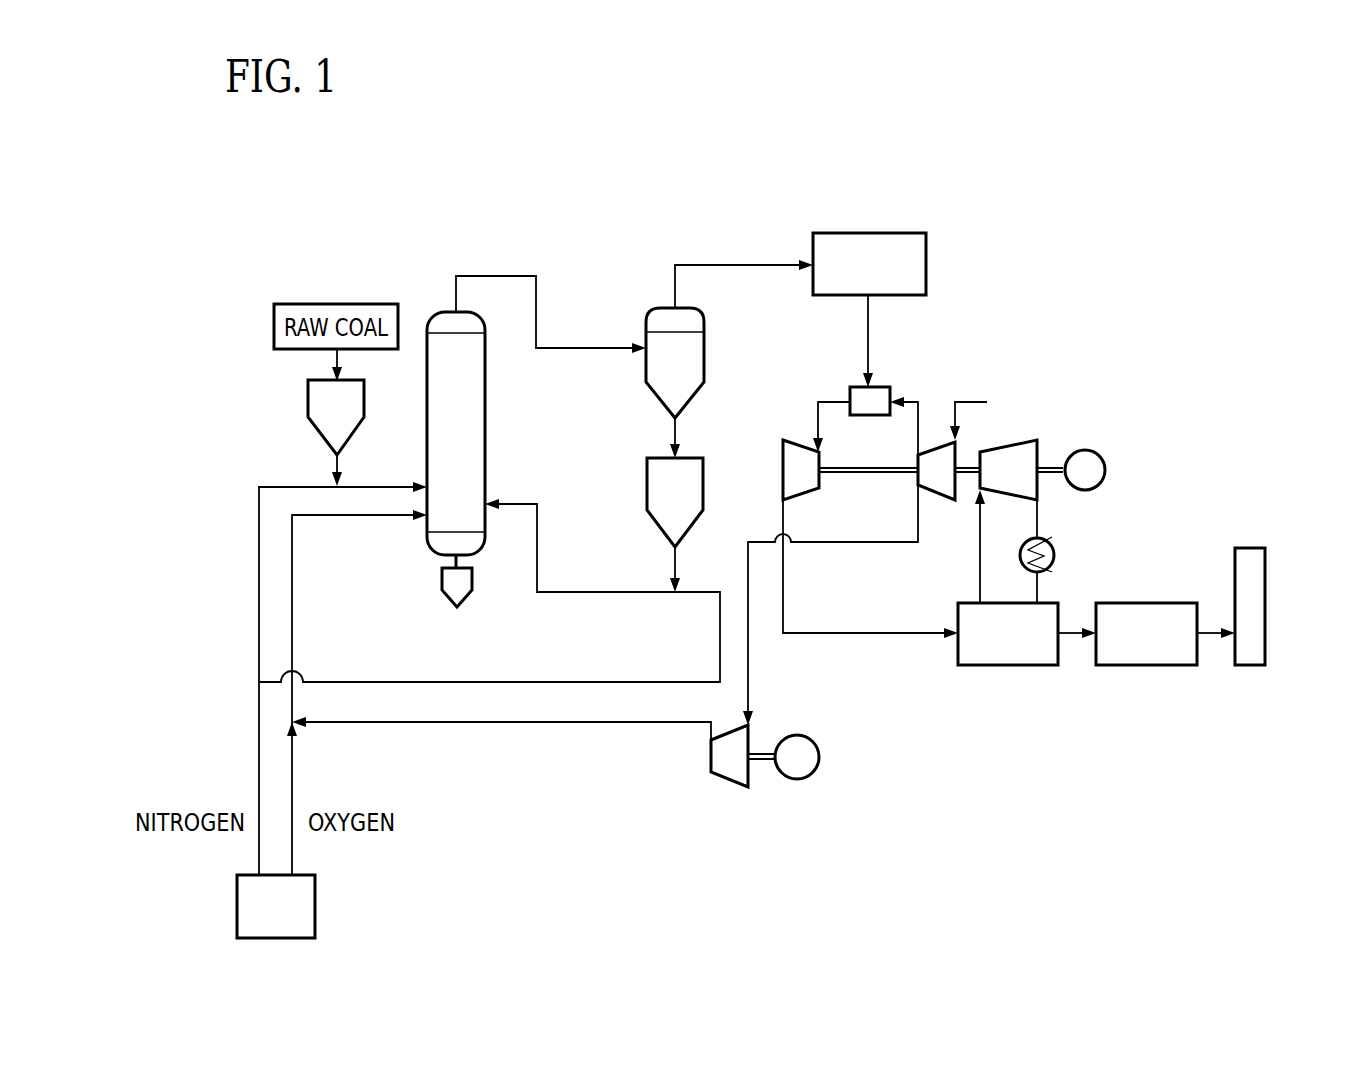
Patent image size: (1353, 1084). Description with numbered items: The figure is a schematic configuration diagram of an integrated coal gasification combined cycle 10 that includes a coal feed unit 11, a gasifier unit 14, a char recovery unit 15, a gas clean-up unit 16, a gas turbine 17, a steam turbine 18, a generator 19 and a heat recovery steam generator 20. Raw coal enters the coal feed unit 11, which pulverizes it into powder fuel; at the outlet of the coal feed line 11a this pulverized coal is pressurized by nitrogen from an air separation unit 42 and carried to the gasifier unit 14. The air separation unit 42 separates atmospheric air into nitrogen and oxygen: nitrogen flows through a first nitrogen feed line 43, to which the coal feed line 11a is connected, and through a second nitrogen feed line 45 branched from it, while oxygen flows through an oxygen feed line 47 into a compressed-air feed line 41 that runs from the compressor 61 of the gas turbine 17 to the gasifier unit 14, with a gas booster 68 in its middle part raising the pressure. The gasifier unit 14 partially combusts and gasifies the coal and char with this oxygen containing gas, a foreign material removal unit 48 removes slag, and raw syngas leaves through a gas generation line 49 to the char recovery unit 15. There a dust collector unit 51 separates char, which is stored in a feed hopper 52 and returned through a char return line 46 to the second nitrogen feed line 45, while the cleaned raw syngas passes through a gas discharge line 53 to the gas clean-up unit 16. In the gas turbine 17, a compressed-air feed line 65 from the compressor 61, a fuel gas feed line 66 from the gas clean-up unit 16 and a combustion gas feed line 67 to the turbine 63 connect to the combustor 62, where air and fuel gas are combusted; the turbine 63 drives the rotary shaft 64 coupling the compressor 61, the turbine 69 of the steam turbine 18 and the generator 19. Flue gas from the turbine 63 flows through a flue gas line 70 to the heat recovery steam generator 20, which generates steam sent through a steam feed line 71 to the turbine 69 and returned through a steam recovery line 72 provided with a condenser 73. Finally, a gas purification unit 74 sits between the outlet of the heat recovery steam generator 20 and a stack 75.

The integrated coal gasification combined cycle 10 is at (628, 146).
The coal feed unit 11 is at (296, 391).
The coal feed line 11a is at (337, 456).
The gasifier unit 14 is at (421, 292).
The char recovery unit 15 is at (630, 317).
The gas clean-up unit 16 is at (868, 219).
The gas turbine 17 is at (846, 433).
The steam turbine 18 is at (1012, 423).
The generator 19 is at (1109, 440).
The heat recovery steam generator 20 is at (1030, 680).
The compressed-air feed line 41 is at (750, 672).
The air separation unit 42 is at (237, 908).
The first nitrogen feed line 43 is at (258, 773).
The second nitrogen feed line 45 is at (352, 682).
The char return line 46 is at (672, 558).
The oxygen feed line 47 is at (293, 772).
The foreign material removal unit 48 is at (440, 578).
The gas generation line 49 is at (493, 276).
The dust collector unit 51 is at (645, 368).
The feed hopper 52 is at (645, 482).
The gas discharge line 53 is at (712, 265).
The compressor 61 is at (938, 497).
The combustor 62 is at (885, 387).
The turbine 63 is at (783, 450).
The rotary shaft 64 is at (867, 475).
The compressed-air feed line 65 is at (921, 418).
The fuel gas feed line 66 is at (868, 318).
The combustion gas feed line 67 is at (828, 400).
The gas booster 68 is at (725, 790).
The turbine 69 is at (1018, 440).
The flue gas line 70 is at (866, 640).
The steam feed line 71 is at (978, 584).
The steam recovery line 72 is at (1037, 576).
The condenser 73 is at (1050, 540).
The gas purification unit 74 is at (1165, 603).
The stack 75 is at (1250, 548).